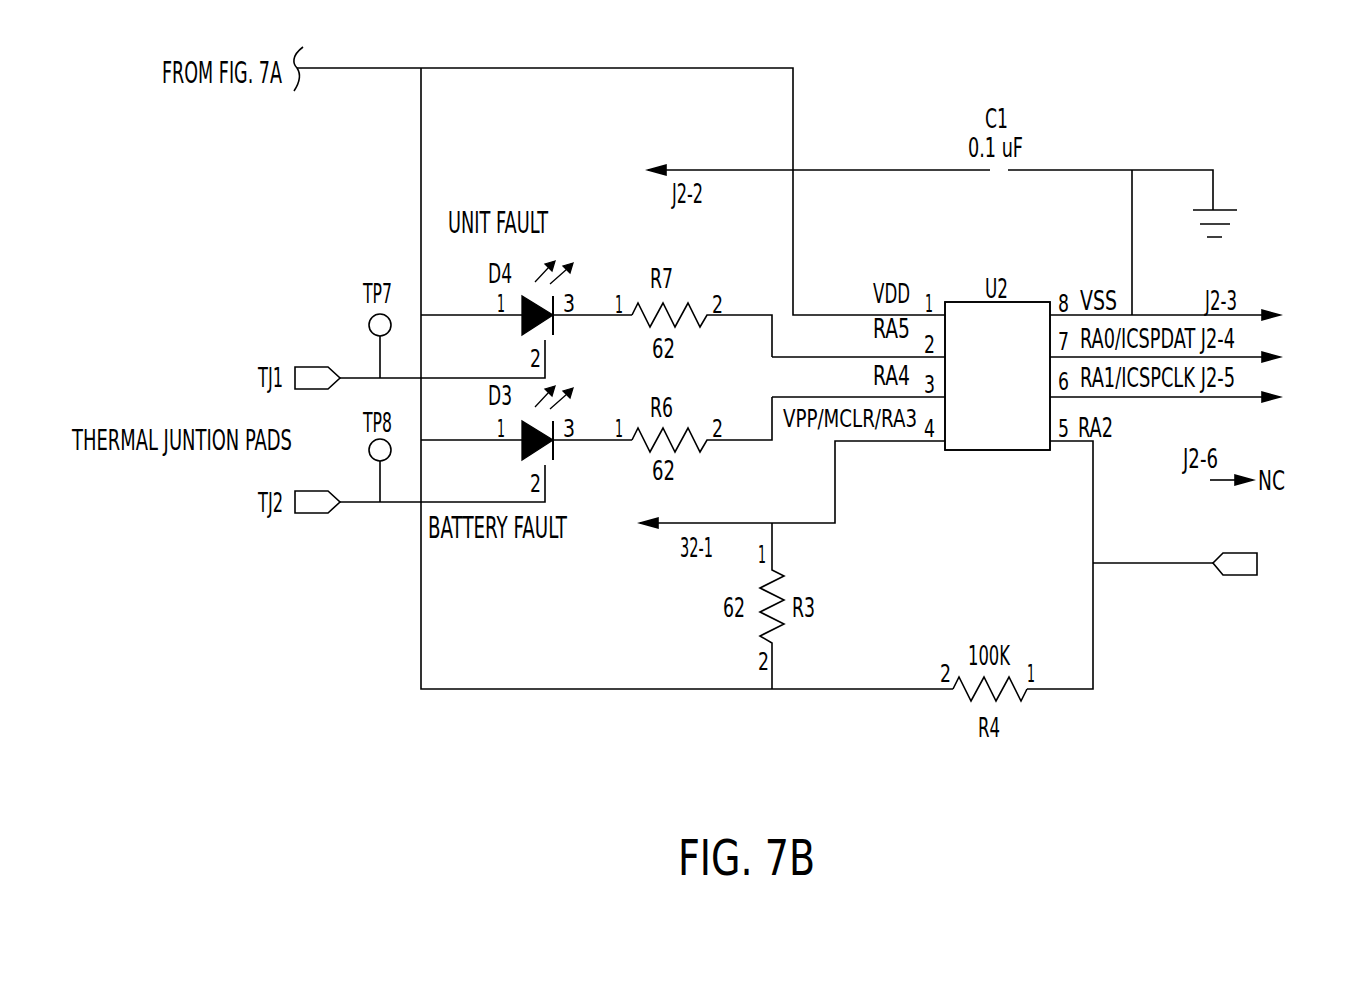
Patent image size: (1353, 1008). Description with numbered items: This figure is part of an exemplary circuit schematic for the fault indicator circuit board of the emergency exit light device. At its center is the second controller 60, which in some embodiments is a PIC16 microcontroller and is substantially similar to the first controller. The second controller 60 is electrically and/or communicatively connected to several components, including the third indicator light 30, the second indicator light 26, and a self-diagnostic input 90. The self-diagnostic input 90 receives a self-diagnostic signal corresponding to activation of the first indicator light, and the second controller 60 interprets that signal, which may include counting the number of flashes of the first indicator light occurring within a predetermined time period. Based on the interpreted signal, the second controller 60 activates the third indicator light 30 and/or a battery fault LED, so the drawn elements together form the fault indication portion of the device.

The third indicator light 30 is at (520, 320).
The second indicator light 26 is at (520, 445).
The second controller 60 is at (1010, 450).
The self-diagnostic input 90 is at (1225, 578).